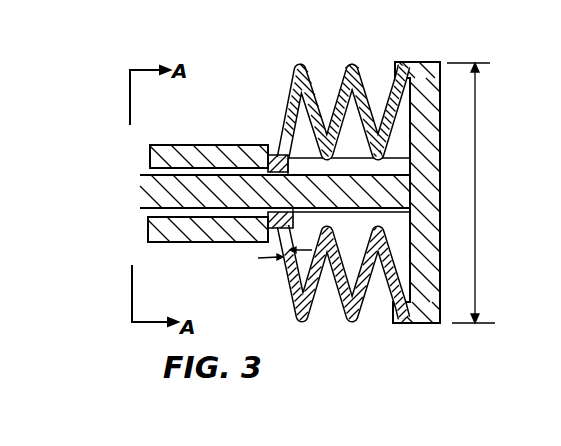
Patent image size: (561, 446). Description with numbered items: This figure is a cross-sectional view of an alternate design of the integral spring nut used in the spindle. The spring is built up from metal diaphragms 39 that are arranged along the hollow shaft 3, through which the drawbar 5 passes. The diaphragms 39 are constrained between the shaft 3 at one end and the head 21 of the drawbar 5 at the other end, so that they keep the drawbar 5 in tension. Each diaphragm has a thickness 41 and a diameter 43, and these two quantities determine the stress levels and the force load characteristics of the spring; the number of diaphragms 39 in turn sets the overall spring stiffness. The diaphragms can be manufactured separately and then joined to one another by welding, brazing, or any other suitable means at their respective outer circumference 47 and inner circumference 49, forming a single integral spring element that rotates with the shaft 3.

The shaft 3 is at (213, 244).
The drawbar 5 is at (160, 195).
The head 21 is at (420, 162).
The metal diaphragms 39 is at (289, 94).
The diaphragm thickness 41 is at (276, 265).
The diaphragm diameter 43 is at (485, 193).
The outer circumference 47 is at (350, 63).
The inner circumference 49 is at (397, 157).